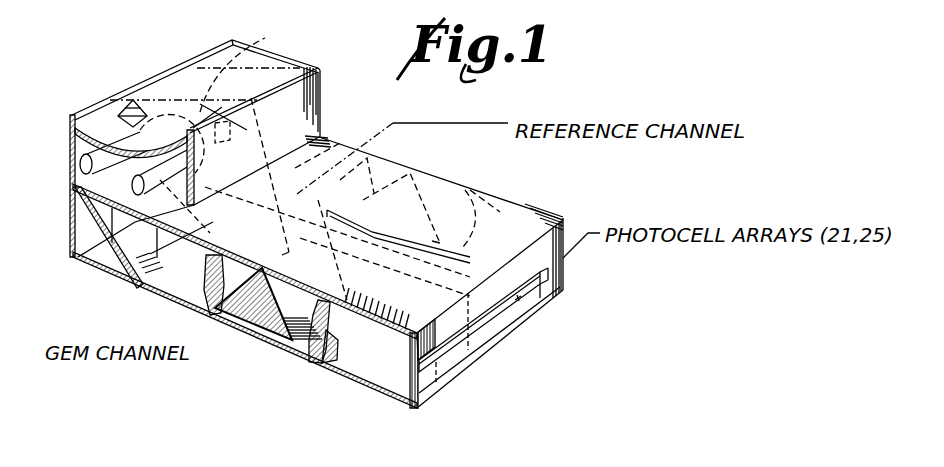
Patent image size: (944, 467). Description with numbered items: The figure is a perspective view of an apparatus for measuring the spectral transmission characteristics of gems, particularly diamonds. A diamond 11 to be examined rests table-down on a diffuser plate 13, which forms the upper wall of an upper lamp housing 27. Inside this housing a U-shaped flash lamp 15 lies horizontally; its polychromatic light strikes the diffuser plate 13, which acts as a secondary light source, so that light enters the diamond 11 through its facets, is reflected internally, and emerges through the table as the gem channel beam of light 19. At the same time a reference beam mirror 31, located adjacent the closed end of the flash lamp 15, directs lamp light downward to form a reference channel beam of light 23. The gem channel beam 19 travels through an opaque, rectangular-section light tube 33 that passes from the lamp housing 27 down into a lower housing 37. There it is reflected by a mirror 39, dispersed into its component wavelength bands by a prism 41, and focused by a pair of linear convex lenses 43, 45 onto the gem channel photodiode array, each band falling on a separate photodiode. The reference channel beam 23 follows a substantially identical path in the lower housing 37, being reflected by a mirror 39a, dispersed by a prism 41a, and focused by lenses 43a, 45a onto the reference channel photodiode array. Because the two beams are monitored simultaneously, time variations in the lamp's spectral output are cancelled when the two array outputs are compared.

The diamond 11 is at (146, 58).
The diffuser plate 13 is at (175, 80).
The U-shaped flash lamp 15 is at (72, 146).
The gem channel beam of light 19 is at (402, 350).
The reference channel beam of light 23 is at (486, 303).
The lamp housing 27 is at (305, 68).
The reference beam mirror 31 is at (300, 75).
The light tube 33 is at (70, 203).
The lower housing 37 is at (160, 270).
The mirror 39 is at (120, 240).
The prism 41 is at (250, 338).
The linear convex lens 43 is at (200, 283).
The linear convex lens 45 is at (326, 366).
The mirror 39a is at (325, 135).
The prism 41a is at (455, 167).
The linear convex lens 43a is at (390, 153).
The linear convex lens 45a is at (520, 193).